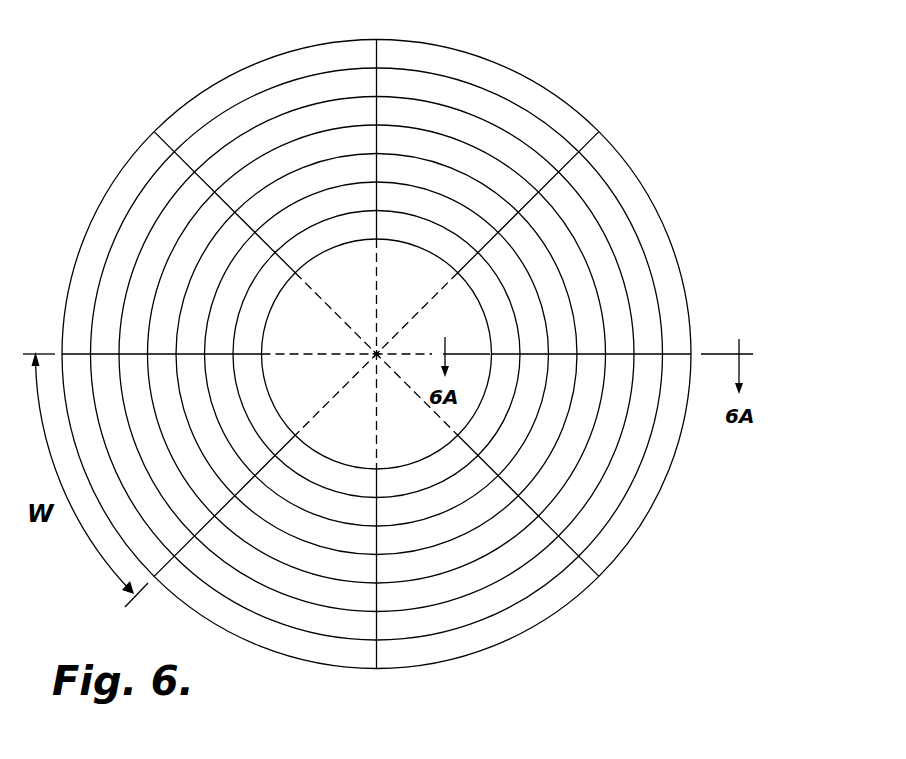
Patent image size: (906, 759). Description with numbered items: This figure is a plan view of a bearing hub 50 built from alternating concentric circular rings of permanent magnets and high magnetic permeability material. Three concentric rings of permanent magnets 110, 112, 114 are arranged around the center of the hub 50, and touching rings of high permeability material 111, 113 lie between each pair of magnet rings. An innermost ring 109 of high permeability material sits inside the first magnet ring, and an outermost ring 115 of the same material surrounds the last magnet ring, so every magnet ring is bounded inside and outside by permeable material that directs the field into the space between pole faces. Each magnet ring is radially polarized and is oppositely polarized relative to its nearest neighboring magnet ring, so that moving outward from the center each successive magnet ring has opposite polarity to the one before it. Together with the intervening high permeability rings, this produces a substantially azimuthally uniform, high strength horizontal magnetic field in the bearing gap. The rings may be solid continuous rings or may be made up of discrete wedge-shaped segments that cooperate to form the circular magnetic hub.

The bearing hub 50 is at (688, 219).
The innermost ring 109 is at (440, 469).
The ring of permanent magnets 110 is at (425, 207).
The ring of high permeability material 111 is at (470, 513).
The ring of permanent magnets 112 is at (510, 195).
The ring of high permeability material 113 is at (573, 502).
The ring of permanent magnets 114 is at (594, 204).
The outermost ring 115 is at (468, 640).